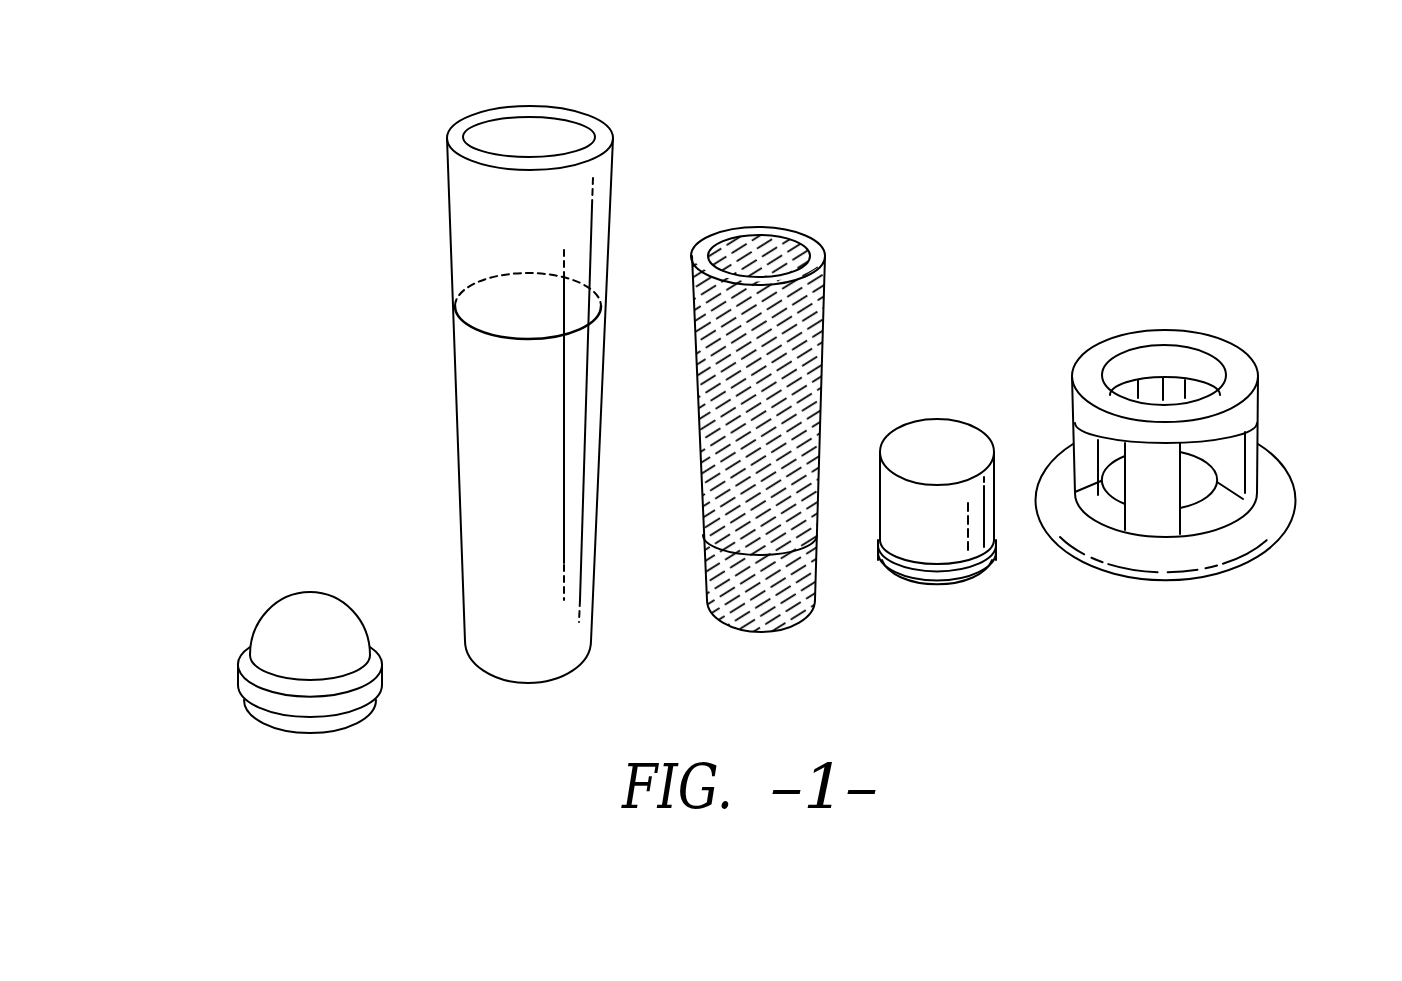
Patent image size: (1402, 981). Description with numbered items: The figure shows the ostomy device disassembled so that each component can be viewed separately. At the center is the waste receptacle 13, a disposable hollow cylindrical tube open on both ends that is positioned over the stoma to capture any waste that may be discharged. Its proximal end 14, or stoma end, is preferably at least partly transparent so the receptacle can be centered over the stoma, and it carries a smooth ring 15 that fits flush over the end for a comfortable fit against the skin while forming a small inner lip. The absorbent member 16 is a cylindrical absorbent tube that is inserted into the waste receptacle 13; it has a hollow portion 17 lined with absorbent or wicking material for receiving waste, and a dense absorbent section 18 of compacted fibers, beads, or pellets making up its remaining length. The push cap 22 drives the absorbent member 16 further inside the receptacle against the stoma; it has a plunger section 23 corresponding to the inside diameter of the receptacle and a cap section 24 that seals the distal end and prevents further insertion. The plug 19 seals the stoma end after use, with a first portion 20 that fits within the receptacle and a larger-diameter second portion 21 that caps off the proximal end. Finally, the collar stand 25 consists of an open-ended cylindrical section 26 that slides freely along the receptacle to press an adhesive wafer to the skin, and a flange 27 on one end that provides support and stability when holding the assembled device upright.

The waste receptacle 13 is at (526, 84).
The proximal end 14 is at (462, 233).
The smooth ring 15 is at (457, 130).
The absorbent member 16 is at (762, 194).
The hollow portion 17 is at (787, 333).
The dense absorbent section 18 is at (722, 573).
The plug 19 is at (307, 566).
The first portion 20 is at (290, 627).
The second portion 21 is at (352, 708).
The push cap 22 is at (933, 396).
The plunger section 23 is at (946, 531).
The cap section 24 is at (925, 572).
The collar stand 25 is at (1165, 300).
The cylindrical section 26 is at (1230, 415).
The flange 27 is at (1243, 535).